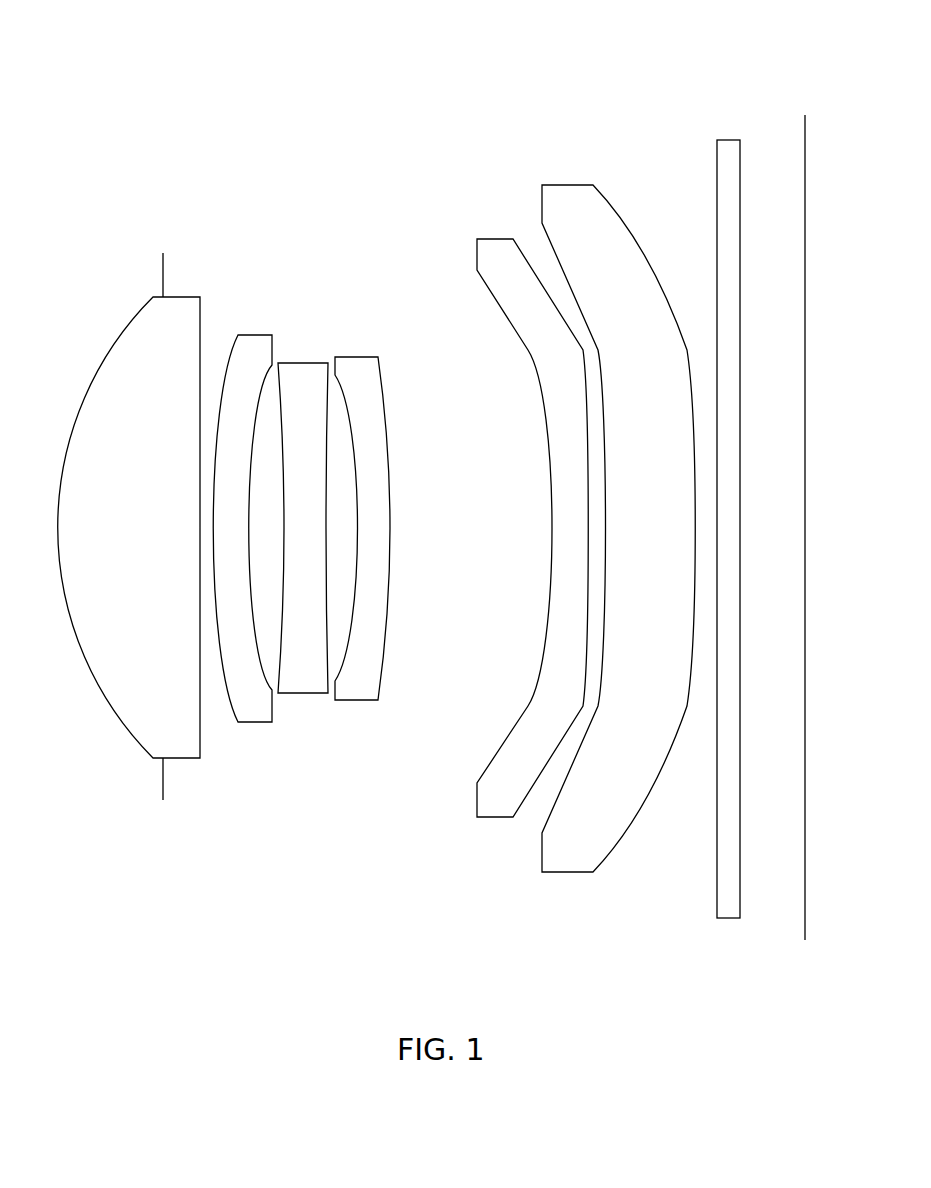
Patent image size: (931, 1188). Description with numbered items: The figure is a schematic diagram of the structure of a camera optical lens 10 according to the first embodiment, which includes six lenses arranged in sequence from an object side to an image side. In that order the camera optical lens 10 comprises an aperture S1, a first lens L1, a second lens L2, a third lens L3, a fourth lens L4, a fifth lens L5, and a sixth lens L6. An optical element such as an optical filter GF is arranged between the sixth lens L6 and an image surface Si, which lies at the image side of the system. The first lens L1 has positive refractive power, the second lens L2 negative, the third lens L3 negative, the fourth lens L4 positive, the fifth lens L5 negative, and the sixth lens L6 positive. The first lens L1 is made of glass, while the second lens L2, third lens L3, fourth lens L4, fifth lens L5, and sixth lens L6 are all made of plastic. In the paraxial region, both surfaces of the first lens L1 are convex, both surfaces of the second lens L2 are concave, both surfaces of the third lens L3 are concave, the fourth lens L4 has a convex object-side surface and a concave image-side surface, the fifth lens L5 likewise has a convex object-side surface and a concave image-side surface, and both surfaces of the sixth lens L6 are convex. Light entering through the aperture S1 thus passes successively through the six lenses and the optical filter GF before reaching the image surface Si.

The camera optical lens 10 is at (456, 34).
The aperture S1 is at (165, 515).
The first lens L1 is at (129, 513).
The second lens L2 is at (242, 516).
The third lens L3 is at (303, 513).
The fourth lens L4 is at (362, 513).
The fifth lens L5 is at (532, 514).
The sixth lens L6 is at (618, 514).
The optical filter GF is at (729, 513).
The image surface Si is at (807, 515).